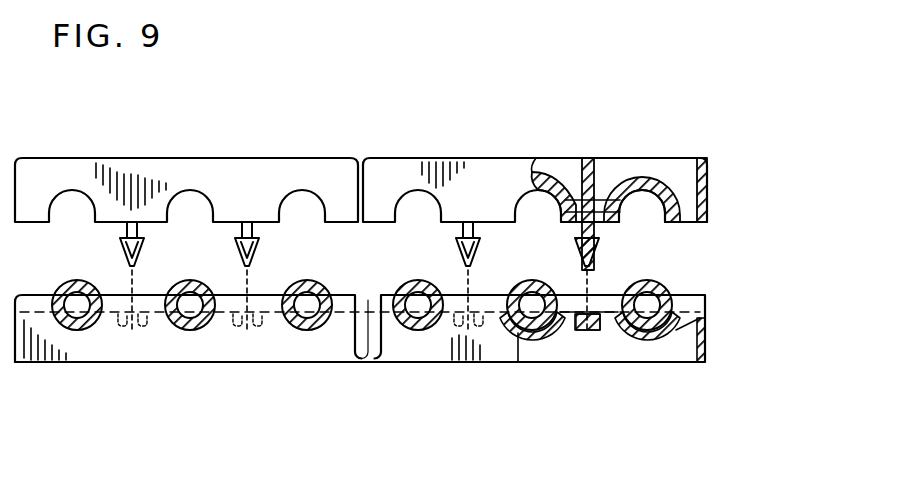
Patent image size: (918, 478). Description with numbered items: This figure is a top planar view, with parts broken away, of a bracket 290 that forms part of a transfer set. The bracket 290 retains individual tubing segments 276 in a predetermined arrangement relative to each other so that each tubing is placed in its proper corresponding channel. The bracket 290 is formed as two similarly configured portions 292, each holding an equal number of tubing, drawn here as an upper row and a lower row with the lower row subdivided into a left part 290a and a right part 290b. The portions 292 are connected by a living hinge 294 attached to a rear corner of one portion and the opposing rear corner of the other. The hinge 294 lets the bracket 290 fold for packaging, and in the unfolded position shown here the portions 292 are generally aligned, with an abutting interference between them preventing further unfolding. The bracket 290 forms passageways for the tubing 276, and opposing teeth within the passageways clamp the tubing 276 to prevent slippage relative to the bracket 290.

The bracket 290 is at (762, 256).
The portions 292 is at (305, 158).
The lower housing left portion 290a is at (352, 358).
The lower housing right portion 290b is at (380, 358).
The living hinge 294 is at (367, 361).
The tubing segments 276 is at (184, 332).